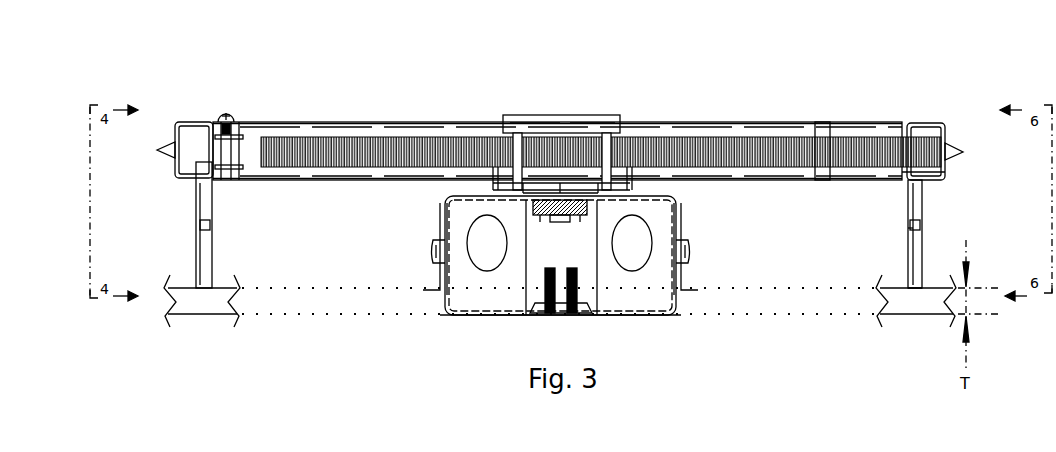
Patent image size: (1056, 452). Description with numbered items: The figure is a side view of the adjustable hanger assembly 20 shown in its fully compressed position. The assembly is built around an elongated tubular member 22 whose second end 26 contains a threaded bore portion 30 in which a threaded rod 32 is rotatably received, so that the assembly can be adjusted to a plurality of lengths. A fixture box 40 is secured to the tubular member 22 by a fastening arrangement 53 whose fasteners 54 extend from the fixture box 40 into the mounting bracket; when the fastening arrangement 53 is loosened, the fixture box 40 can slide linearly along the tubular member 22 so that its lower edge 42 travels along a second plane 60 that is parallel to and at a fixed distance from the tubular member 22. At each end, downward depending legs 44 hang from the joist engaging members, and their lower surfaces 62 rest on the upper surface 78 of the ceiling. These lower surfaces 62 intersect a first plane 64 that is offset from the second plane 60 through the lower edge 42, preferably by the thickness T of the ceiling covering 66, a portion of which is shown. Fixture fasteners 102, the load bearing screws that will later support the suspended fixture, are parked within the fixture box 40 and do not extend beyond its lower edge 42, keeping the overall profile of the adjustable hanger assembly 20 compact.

The adjustable hanger assembly 20 is at (712, 66).
The elongated tubular member 22 is at (798, 126).
The second end 26 is at (922, 172).
The threaded bore portion 30 is at (893, 126).
The threaded rod 32 is at (305, 168).
The fixture box 40 is at (473, 219).
The lower edge 42 is at (640, 316).
The downward depending legs 44 is at (212, 228).
The fastening arrangement 53 is at (497, 106).
The fasteners 54 is at (612, 113).
The second plane 60 is at (388, 318).
The lower surfaces 62 is at (914, 300).
The first plane 64 is at (385, 286).
The ceiling covering 66 is at (212, 303).
The upper surface of ceiling 78 is at (176, 280).
The fixture fasteners 102 is at (545, 280).